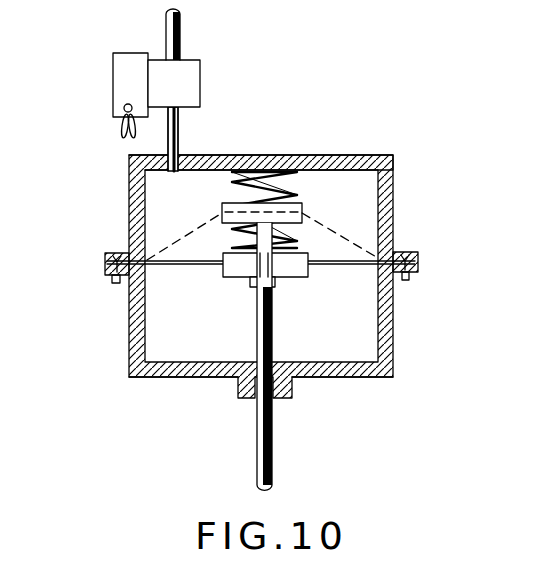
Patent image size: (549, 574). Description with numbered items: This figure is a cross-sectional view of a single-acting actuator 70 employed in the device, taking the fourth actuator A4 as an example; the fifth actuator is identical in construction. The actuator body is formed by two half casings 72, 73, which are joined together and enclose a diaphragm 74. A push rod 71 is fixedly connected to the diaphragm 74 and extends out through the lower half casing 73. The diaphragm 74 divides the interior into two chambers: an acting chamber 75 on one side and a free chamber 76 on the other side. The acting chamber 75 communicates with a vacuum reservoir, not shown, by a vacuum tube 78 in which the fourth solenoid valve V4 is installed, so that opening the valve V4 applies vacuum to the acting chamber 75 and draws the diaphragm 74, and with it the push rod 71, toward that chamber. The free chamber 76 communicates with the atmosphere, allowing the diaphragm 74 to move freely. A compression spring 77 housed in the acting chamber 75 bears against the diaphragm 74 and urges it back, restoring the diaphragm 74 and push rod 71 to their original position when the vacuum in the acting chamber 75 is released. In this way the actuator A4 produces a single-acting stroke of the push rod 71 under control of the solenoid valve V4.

The pneumatic actuator housing 70 is at (362, 135).
The push rod 71 is at (273, 457).
The half casing 72 is at (391, 182).
The half casing 73 is at (393, 363).
The diaphragm 74 is at (337, 264).
The acting chamber 75 is at (365, 220).
The free chamber 76 is at (322, 342).
The compression spring 77 is at (252, 180).
The vacuum tube 78 is at (183, 134).
The fourth solenoid valve V4 is at (187, 70).
The fourth actuator A4 is at (120, 303).